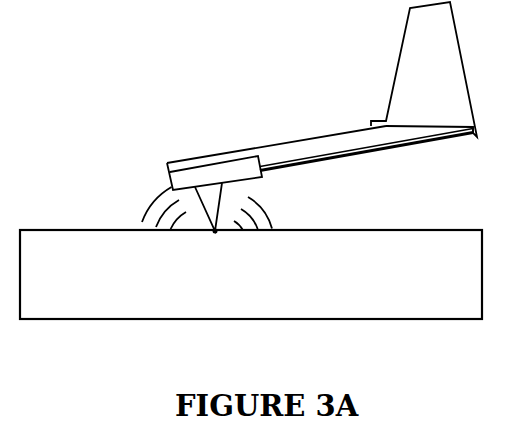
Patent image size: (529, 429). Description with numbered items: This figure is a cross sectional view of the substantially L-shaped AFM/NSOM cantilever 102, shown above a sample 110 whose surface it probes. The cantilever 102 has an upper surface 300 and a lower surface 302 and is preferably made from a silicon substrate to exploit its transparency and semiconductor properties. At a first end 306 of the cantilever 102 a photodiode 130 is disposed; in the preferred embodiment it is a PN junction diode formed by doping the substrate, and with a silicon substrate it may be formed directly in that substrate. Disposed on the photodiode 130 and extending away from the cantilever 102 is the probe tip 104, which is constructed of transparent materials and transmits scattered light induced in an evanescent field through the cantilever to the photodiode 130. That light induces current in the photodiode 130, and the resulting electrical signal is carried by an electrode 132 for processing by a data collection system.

The cantilever 102 is at (447, 111).
The probe tip 104 is at (204, 208).
The sample 110 is at (409, 300).
The photodiode 130 is at (232, 170).
The electrode 132 is at (370, 148).
The upper surface 300 is at (317, 138).
The lower surface 302 is at (467, 140).
The first end 306 is at (167, 175).